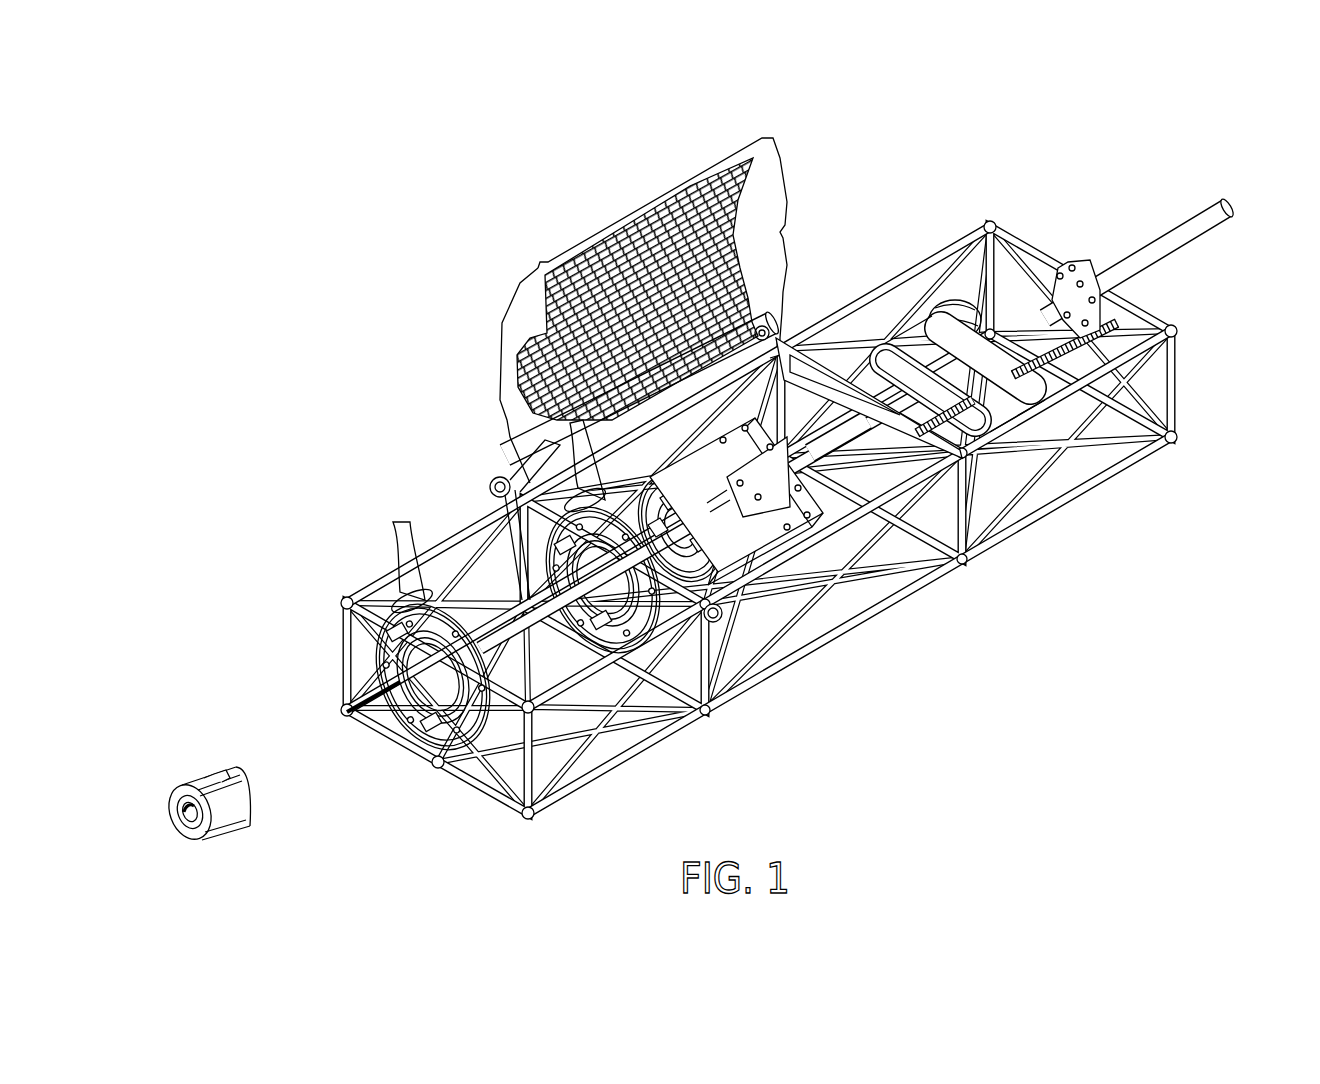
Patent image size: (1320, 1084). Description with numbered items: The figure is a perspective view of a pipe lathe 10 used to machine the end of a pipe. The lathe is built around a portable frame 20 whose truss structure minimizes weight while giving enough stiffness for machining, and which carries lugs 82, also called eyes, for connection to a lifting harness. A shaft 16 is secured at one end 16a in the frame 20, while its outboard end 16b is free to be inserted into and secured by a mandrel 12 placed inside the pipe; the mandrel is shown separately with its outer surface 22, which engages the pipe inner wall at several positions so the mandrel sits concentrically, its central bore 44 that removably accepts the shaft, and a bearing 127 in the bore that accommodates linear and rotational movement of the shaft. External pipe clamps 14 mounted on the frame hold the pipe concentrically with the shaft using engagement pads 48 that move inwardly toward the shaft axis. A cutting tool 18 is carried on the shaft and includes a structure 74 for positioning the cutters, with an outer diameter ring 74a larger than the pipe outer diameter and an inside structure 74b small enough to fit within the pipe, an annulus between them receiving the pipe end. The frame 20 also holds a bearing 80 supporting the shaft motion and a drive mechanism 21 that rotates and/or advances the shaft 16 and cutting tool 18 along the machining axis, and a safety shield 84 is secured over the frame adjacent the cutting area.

The pipe lathe 10 is at (373, 351).
The mandrel 12 is at (232, 800).
The external pipe clamp 14 is at (440, 595).
The shaft 16 is at (803, 460).
The end 16a is at (838, 440).
The outboard end 16b is at (347, 712).
The cutting tool 18 is at (775, 510).
The frame 20 is at (1077, 483).
The drive mechanism 21 is at (923, 346).
The outer surface 22 is at (208, 768).
The central bore 44 is at (185, 812).
The engagement pads 48 is at (560, 548).
The structure 74 is at (735, 545).
The outer diameter ring 74a is at (700, 540).
The inside structure 74b is at (690, 580).
The bearing 80 is at (857, 427).
The lugs 82 is at (497, 478).
The safety shield 84 is at (524, 318).
The bearing 127 is at (196, 835).